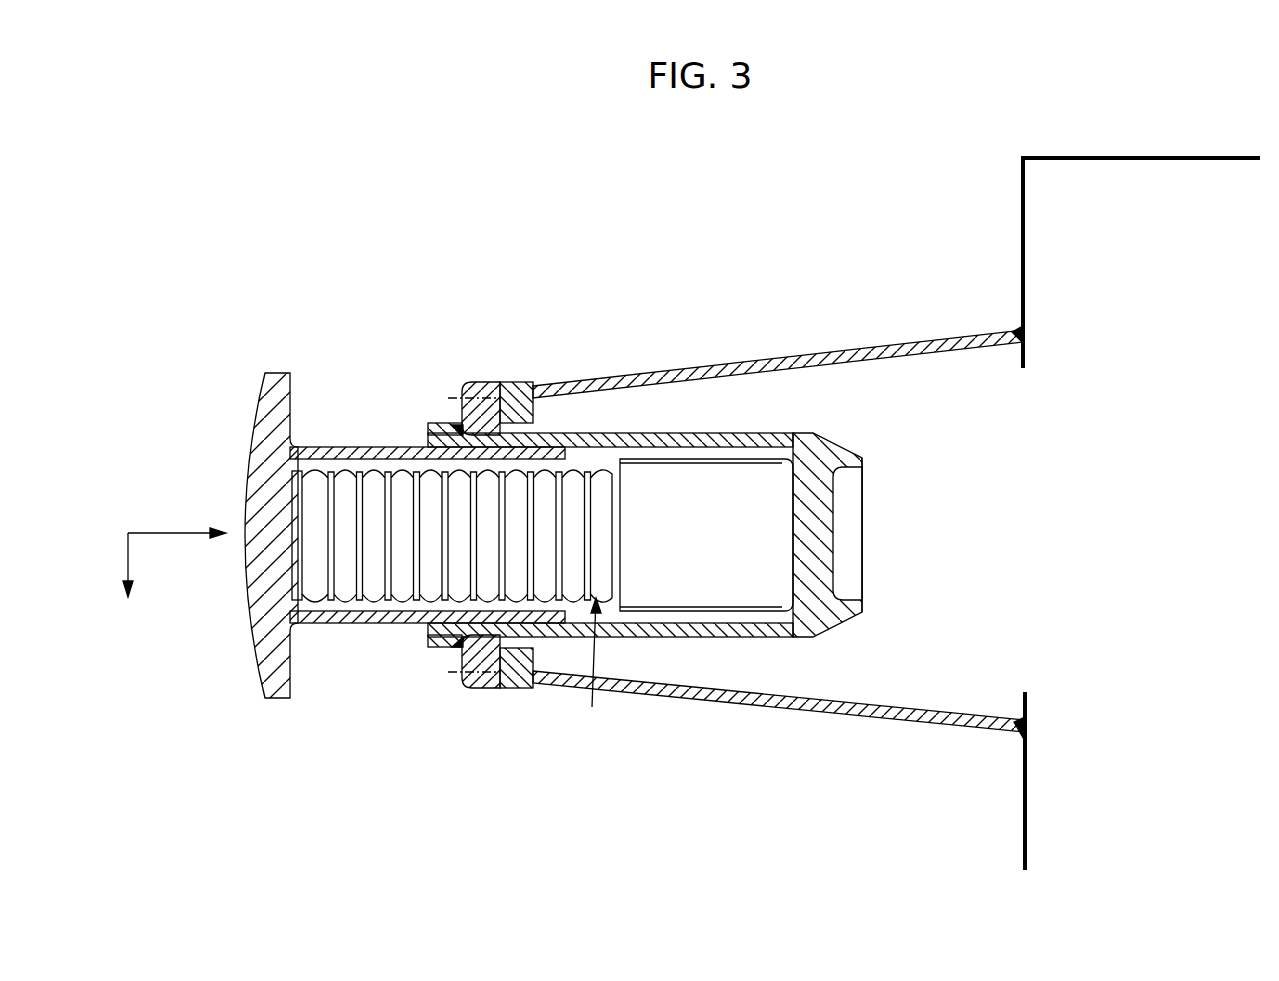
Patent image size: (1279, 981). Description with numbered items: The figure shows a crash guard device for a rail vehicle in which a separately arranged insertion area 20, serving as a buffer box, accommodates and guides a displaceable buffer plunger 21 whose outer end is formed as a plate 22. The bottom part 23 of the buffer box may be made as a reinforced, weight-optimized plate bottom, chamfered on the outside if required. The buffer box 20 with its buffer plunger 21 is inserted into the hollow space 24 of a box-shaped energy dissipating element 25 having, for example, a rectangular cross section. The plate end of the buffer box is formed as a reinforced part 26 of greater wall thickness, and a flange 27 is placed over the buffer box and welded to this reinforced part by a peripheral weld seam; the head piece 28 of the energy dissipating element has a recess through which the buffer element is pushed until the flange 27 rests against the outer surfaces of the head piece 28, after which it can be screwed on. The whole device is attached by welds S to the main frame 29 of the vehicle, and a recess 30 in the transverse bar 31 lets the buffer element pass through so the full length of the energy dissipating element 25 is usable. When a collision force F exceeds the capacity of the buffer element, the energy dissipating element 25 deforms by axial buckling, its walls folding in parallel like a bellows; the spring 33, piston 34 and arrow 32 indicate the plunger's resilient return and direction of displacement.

The insertion area 20 is at (662, 627).
The buffer plunger 21 is at (368, 447).
The plate 22 is at (268, 410).
The bottom part 23 is at (836, 605).
The hollow space 24 is at (700, 397).
The energy dissipating element 25 is at (710, 702).
The reinforced part 26 is at (430, 641).
The flange 27 is at (482, 382).
The head piece 28 is at (528, 382).
The main frame 29 is at (1130, 158).
The recess 30 is at (1035, 497).
The transverse bar 31 is at (1025, 818).
The direction arrow 32 is at (580, 665).
The spring 33 is at (348, 585).
The piston 34 is at (773, 478).
The welds S is at (455, 428).
The force F is at (174, 545).